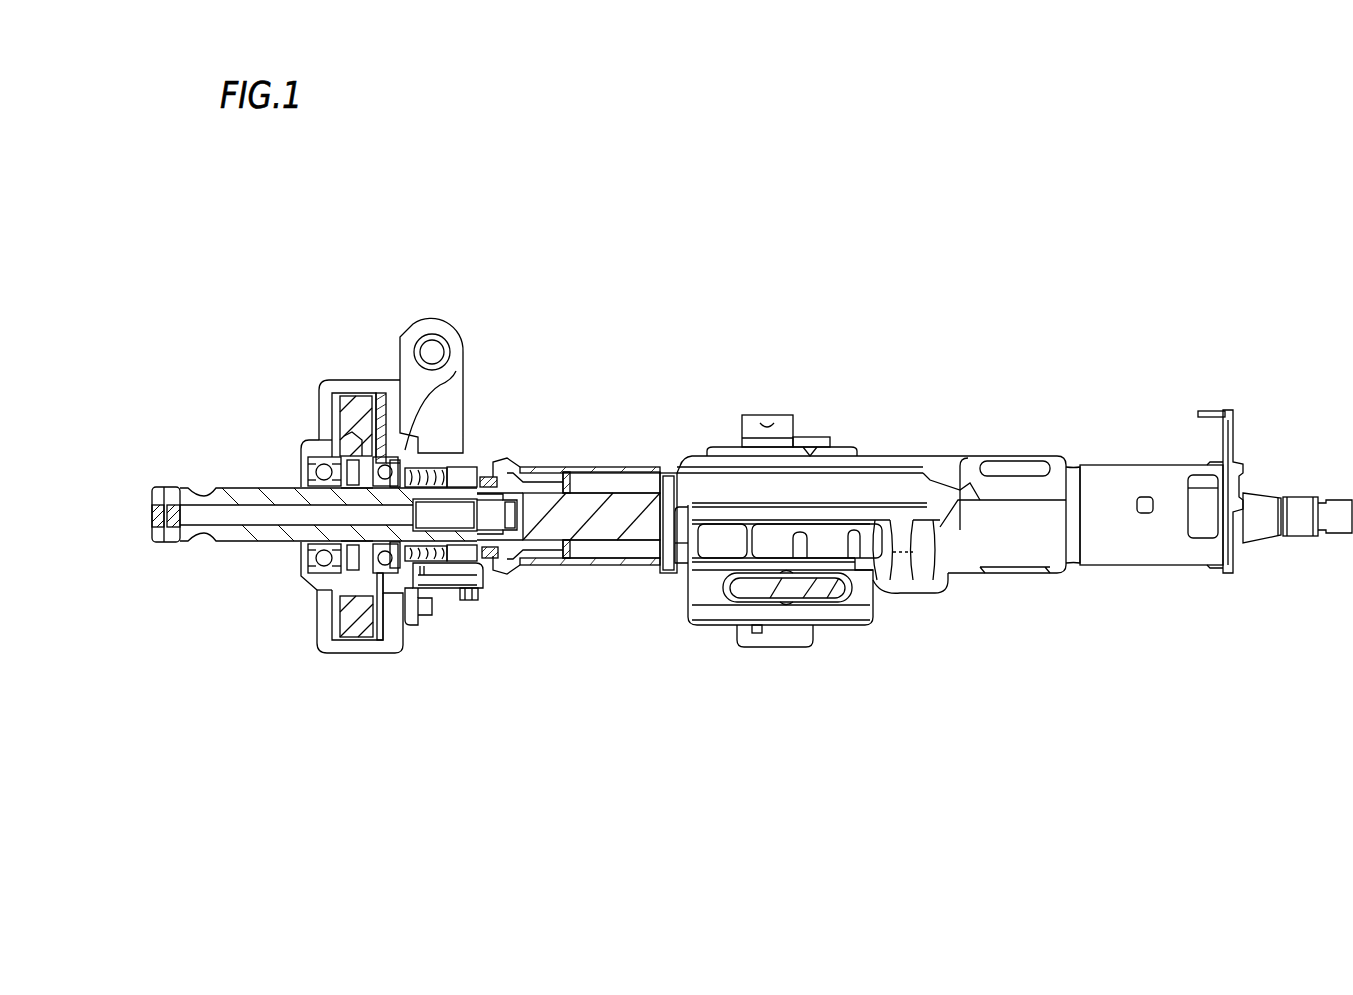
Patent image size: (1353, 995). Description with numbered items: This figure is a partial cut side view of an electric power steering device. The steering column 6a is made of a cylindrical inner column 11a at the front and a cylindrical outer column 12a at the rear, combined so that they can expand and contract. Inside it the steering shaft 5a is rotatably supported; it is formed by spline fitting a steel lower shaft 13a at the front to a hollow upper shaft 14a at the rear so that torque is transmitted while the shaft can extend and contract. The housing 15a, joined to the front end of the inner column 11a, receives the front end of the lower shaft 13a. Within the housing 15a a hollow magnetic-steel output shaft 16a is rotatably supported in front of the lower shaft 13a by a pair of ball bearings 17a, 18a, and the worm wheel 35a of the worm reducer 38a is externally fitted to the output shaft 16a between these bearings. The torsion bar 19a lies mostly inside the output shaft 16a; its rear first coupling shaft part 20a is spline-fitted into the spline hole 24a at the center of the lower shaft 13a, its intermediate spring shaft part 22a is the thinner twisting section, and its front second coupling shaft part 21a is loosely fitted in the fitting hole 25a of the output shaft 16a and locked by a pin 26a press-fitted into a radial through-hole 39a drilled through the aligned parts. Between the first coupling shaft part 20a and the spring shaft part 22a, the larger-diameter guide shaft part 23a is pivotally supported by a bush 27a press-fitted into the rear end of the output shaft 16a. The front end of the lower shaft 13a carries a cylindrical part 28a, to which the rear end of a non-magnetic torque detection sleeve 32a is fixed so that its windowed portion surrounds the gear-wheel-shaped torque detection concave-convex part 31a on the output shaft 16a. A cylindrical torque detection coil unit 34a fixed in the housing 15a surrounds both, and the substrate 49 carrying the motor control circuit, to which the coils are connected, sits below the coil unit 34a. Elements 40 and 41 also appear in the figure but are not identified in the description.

The steering shaft 5a is at (1209, 511).
The steering column 6a is at (863, 482).
The inner column 11a is at (630, 467).
The outer column 12a is at (885, 493).
The lower shaft 13a is at (607, 542).
The upper shaft 14a is at (1252, 523).
The housing 15a is at (352, 398).
The output shaft 16a is at (309, 482).
The ball bearing 17a is at (307, 460).
The ball bearing 18a is at (383, 398).
The torsion bar 19a is at (299, 557).
The first coupling shaft part 20a is at (568, 482).
The second coupling shaft part 21a is at (151, 513).
The spring shaft part 22a is at (230, 512).
The guide shaft part 23a is at (500, 556).
The spline hole 24a is at (527, 560).
The fitting hole 25a is at (158, 543).
The pin 26a is at (172, 543).
The bush 27a is at (433, 580).
The cylindrical part 28a is at (513, 476).
The torque detection concave-convex part 31a is at (462, 467).
The torque detection sleeve 32a is at (490, 476).
The torque detection coil unit 34a is at (437, 462).
The worm wheel 35a is at (351, 625).
The worm reducer 38a is at (326, 395).
The through-hole 39a is at (167, 488).
The housing flange 40 is at (319, 410).
The lever arm 41 is at (456, 343).
The substrate 49 is at (469, 601).